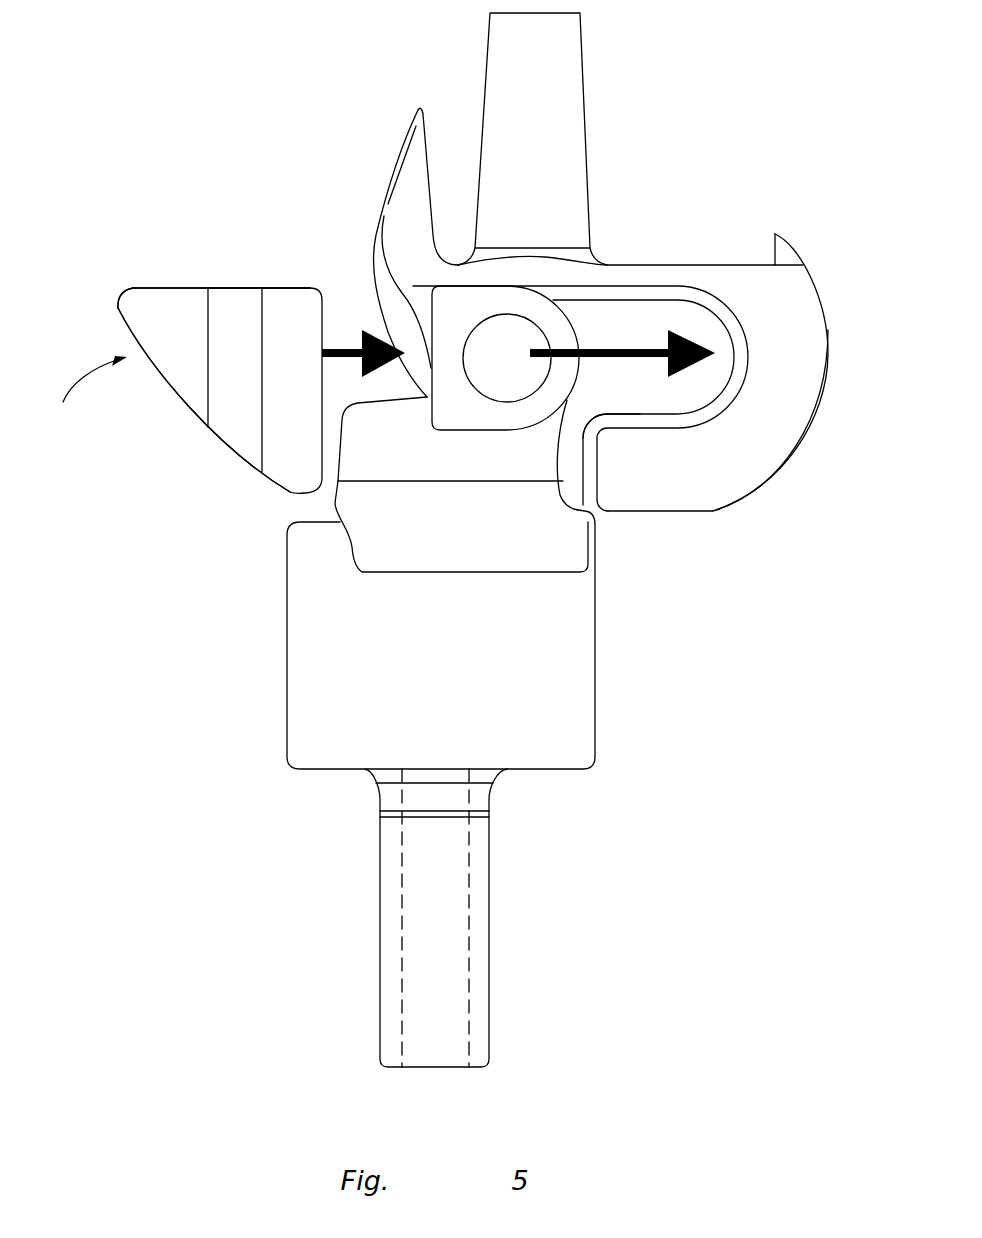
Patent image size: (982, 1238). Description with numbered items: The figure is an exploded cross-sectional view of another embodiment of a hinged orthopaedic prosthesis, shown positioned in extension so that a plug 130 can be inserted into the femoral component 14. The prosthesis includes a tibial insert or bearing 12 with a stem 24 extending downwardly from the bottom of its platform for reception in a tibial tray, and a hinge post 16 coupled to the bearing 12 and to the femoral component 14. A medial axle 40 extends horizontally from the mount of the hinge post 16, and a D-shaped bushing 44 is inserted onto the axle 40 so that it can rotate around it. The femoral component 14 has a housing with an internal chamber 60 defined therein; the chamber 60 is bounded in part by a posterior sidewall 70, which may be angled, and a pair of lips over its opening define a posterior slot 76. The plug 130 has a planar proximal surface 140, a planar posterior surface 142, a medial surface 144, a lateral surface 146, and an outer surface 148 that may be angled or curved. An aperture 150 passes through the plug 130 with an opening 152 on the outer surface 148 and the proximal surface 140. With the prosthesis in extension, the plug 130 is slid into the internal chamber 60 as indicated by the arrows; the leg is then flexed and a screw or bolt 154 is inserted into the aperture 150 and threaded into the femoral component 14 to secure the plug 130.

The tibial insert or bearing 12 is at (583, 722).
The femoral component 14 is at (732, 275).
The hinge post 16 is at (565, 553).
The stem 24 is at (490, 932).
The medial axle 40 is at (530, 320).
The bushing 44 is at (447, 308).
The internal chamber 60 is at (637, 333).
The posterior sidewall 70 is at (746, 368).
The posterior slot 76 is at (674, 428).
The plug 130 is at (125, 300).
The proximal wall or surface 140 is at (163, 288).
The posterior wall or surface 142 is at (322, 310).
The medial wall or surface 144 is at (80, 392).
The lateral wall or surface 146 is at (182, 388).
The outer surface 148 is at (115, 318).
The aperture 150 is at (212, 418).
The opening 152 is at (263, 478).
The screw or bolt 154 is at (258, 290).